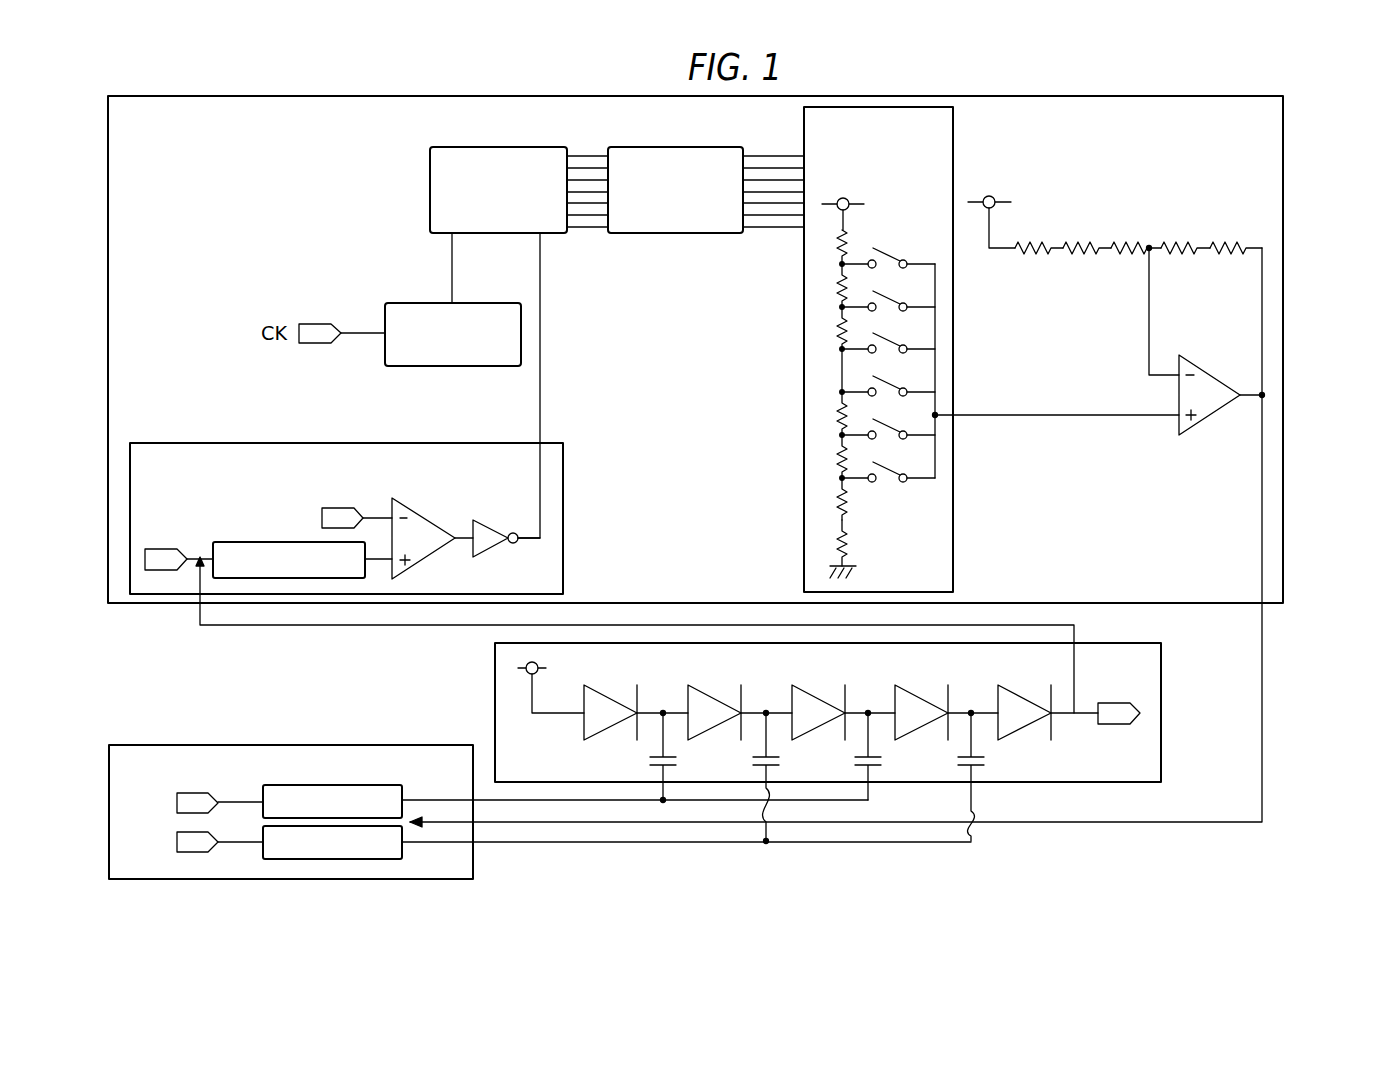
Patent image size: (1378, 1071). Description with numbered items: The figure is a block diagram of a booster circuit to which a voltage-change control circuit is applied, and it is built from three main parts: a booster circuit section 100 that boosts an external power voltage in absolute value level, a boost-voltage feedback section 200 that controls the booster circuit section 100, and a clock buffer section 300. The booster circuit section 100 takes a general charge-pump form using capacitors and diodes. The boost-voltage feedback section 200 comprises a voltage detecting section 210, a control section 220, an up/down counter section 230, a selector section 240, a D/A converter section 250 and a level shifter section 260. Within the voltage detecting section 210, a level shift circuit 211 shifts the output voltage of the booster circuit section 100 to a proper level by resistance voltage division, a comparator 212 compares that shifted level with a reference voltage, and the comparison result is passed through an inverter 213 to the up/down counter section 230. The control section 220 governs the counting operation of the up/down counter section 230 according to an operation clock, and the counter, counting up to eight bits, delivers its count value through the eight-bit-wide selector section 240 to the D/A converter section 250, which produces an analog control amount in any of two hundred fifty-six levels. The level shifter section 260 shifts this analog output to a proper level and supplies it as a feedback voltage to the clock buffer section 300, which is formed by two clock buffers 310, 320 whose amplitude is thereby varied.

The booster circuit section 100 is at (1161, 713).
The boost-voltage feedback section 200 is at (1283, 350).
The voltage detecting section 210 is at (350, 443).
The level shift circuit 211 is at (250, 542).
The comparator 212 is at (438, 526).
The inverter 213 is at (497, 527).
The control section 220 is at (488, 303).
The up/down counter section 230 is at (500, 147).
The selector section 240 is at (678, 147).
The D/A converter section 250 is at (953, 153).
The level shifter section 260 is at (1214, 375).
The clock buffer section 300 is at (296, 745).
The clock buffer 310 is at (404, 795).
The clock buffer 320 is at (404, 854).